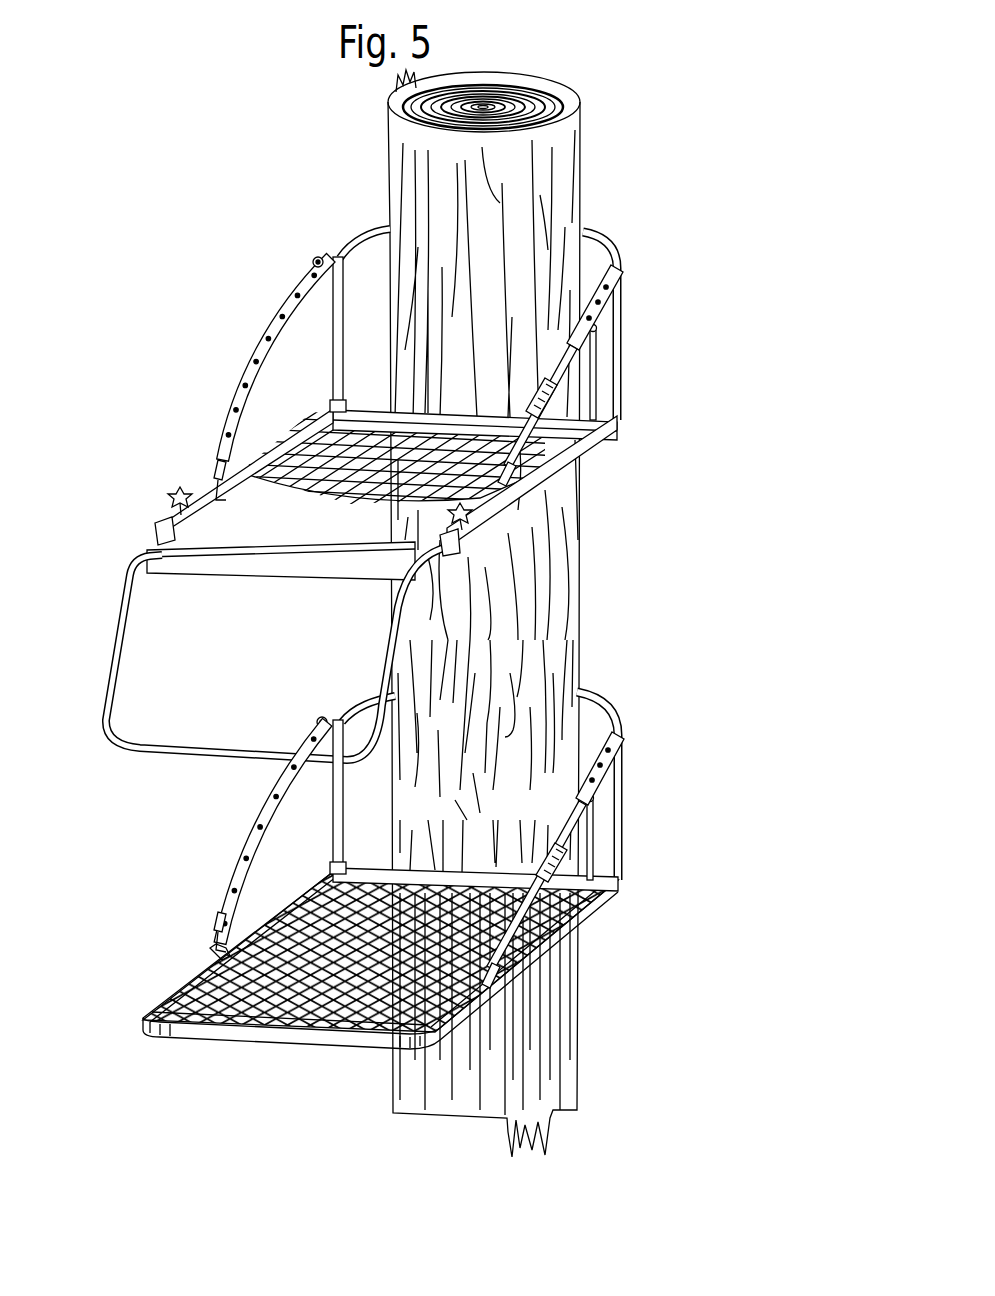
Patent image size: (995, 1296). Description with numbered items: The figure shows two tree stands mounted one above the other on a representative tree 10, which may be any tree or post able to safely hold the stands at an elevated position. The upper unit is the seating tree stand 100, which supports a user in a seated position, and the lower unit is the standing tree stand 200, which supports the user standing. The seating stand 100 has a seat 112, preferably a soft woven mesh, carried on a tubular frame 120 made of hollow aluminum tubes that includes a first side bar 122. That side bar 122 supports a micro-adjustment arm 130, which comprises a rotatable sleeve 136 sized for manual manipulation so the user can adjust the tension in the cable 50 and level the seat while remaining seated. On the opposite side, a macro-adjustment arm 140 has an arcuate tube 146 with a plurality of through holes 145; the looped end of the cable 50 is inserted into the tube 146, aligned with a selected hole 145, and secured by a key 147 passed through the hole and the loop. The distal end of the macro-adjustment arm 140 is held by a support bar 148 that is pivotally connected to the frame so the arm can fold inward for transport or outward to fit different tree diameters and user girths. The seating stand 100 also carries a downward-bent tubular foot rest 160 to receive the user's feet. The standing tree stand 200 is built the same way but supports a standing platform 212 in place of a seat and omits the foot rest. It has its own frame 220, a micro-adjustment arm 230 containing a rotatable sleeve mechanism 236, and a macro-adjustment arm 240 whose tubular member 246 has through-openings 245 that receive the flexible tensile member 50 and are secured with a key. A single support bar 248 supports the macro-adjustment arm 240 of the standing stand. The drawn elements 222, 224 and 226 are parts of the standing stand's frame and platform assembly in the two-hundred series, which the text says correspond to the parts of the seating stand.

The tree 10 is at (449, 761).
The cable 50 is at (390, 226).
The seating tree stand 100 is at (270, 203).
The seat 112 is at (355, 508).
The frame 120 is at (558, 491).
The first side bar 122 is at (600, 433).
The micro-adjustment arm 130 is at (565, 404).
The rotatable sleeve 136 is at (583, 456).
The macro-adjustment arm 140 is at (238, 322).
The through holes 145 is at (247, 387).
The tube 146 is at (230, 420).
The key 147 is at (313, 262).
The support bar 148 is at (333, 364).
The foot rest 160 is at (120, 740).
The standing tree stand 200 is at (190, 1071).
The standing platform 212 is at (172, 1037).
The frame 220 is at (540, 966).
The platform mesh / side rail 222 is at (462, 1004).
The lower clip 224 is at (230, 944).
The front frame member 226 is at (300, 1042).
The micro-adjustment arm 230 is at (565, 858).
The rotatable sleeve mechanism 236 is at (570, 912).
The macro-adjustment arm 240 is at (220, 875).
The through-openings 245 is at (285, 788).
The tubular member 246 is at (258, 820).
The support bar 248 is at (335, 824).